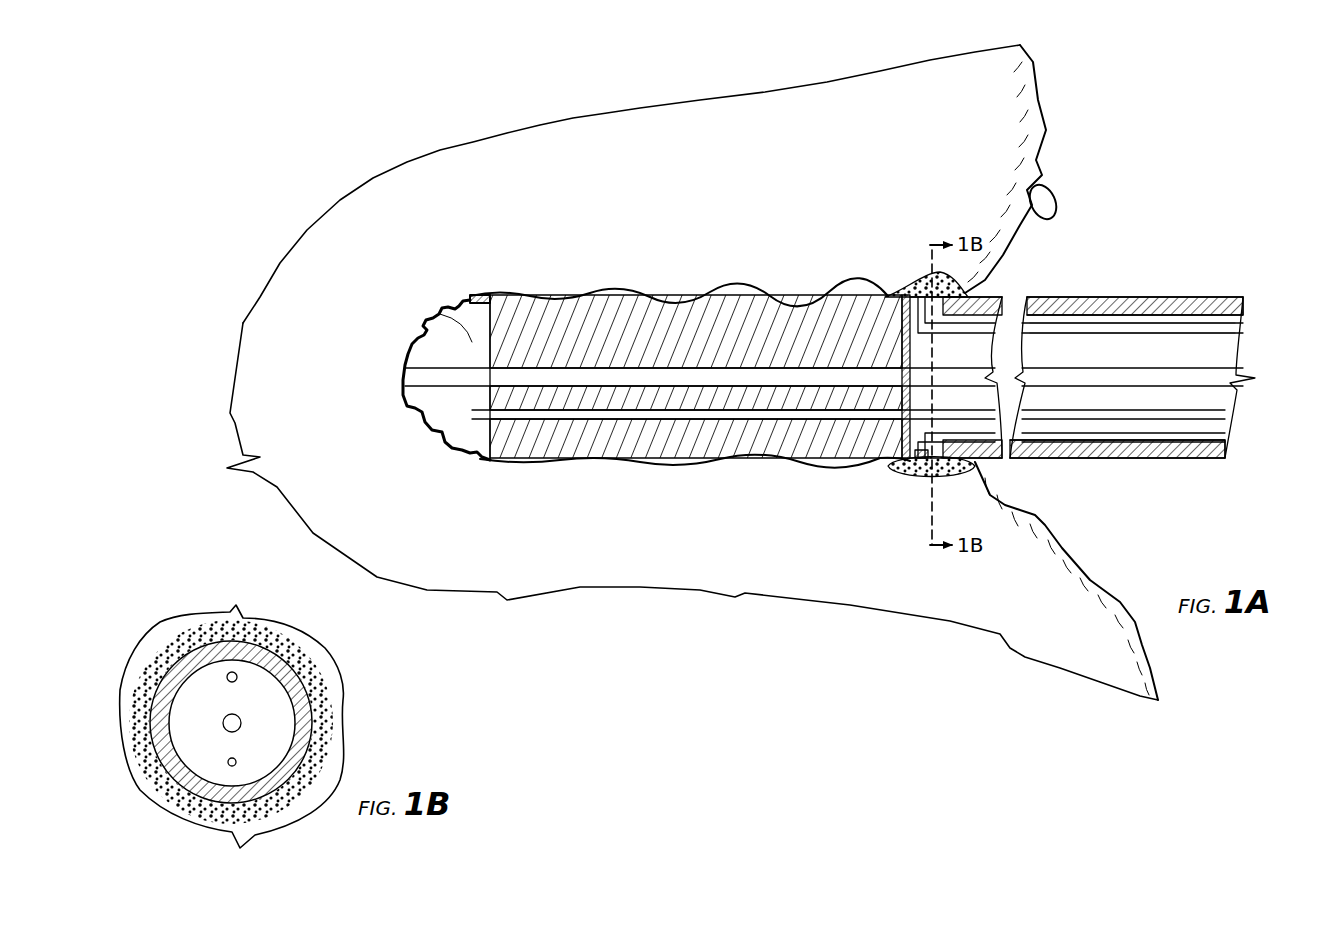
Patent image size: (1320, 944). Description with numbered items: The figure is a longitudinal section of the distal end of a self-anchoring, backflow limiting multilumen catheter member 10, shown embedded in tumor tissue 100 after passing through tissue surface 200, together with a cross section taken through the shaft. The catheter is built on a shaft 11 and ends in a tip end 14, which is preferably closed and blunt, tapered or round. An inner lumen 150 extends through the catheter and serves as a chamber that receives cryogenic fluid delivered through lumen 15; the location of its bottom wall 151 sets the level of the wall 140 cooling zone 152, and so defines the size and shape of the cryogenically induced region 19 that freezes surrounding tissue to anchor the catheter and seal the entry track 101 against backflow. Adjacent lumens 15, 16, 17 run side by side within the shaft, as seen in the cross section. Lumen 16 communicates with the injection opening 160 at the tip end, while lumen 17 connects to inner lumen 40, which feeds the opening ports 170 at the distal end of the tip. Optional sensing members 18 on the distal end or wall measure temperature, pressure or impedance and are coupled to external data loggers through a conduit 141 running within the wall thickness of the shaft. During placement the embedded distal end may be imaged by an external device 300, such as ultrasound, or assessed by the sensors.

In FIG. 1A, the multilumen catheter member 10 is at (1230, 186).
In FIG. 1A, the shaft 11 is at (1172, 294).
In FIG. 1B, the shaft 11 is at (204, 640).
In FIG. 1A, the tip end 14 is at (432, 318).
In FIG. 1A, the lumen 15 is at (1077, 327).
In FIG. 1B, the lumen 15 is at (235, 672).
In FIG. 1A, the inner lumen 16 is at (545, 375).
In FIG. 1B, the inner lumen 16 is at (227, 720).
In FIG. 1A, the inner lumen 17 is at (565, 412).
In FIG. 1B, the inner lumen 17 is at (226, 758).
In FIG. 1A, the sensing members 18 is at (485, 296).
In FIG. 1A, the cryogenically induced region 19 is at (960, 482).
In FIG. 1B, the cryogenically induced region 19 is at (288, 653).
In FIG. 1A, the inner lumen 40 is at (452, 357).
In FIG. 1A, the tumor tissue 100 is at (815, 115).
In FIG. 1A, the entry track 101 is at (657, 290).
In FIG. 1A, the wall 140 is at (422, 436).
In FIG. 1A, the conduit 141 is at (1130, 459).
In FIG. 1A, the inner lumen 150 is at (918, 353).
In FIG. 1B, the inner lumen 150 is at (262, 708).
In FIG. 1A, the bottom wall 151 is at (900, 435).
In FIG. 1A, the cooling zone 152 is at (918, 283).
In FIG. 1A, the injection opening 160 is at (422, 377).
In FIG. 1A, the opening ports 170 is at (468, 452).
In FIG. 1A, the tissue surface 200 is at (1042, 100).
In FIG. 1A, the external device 300 is at (1055, 193).